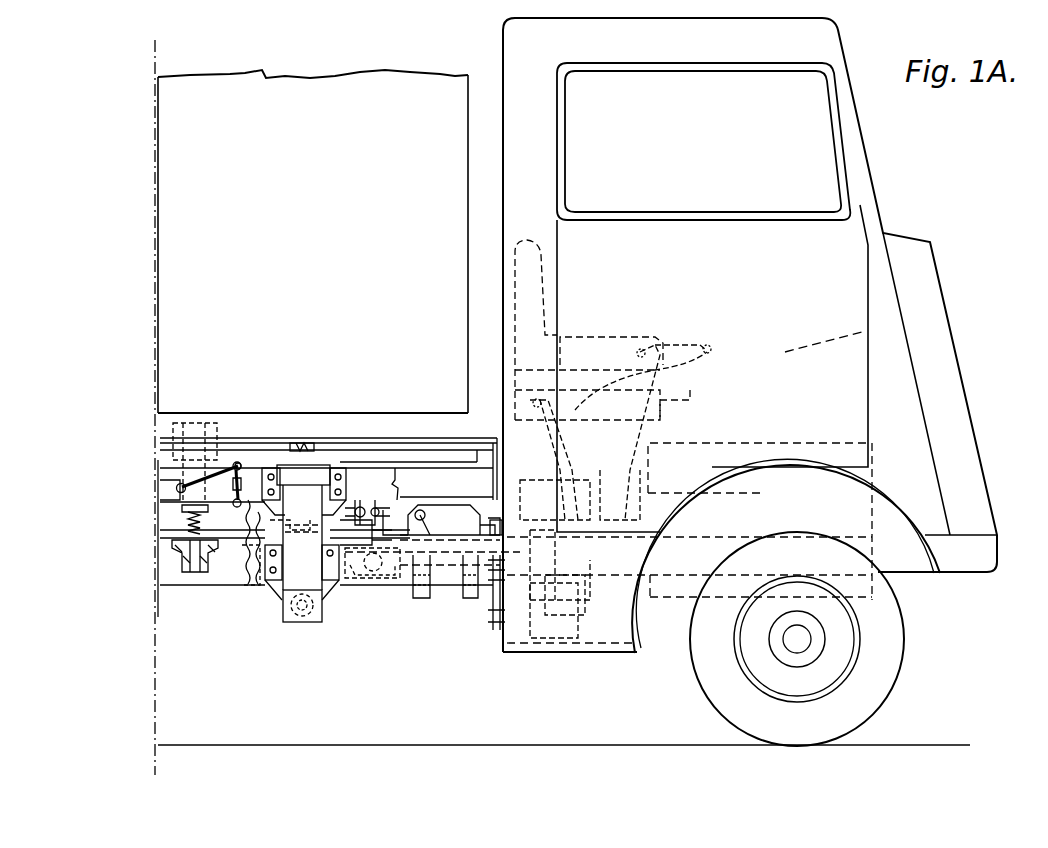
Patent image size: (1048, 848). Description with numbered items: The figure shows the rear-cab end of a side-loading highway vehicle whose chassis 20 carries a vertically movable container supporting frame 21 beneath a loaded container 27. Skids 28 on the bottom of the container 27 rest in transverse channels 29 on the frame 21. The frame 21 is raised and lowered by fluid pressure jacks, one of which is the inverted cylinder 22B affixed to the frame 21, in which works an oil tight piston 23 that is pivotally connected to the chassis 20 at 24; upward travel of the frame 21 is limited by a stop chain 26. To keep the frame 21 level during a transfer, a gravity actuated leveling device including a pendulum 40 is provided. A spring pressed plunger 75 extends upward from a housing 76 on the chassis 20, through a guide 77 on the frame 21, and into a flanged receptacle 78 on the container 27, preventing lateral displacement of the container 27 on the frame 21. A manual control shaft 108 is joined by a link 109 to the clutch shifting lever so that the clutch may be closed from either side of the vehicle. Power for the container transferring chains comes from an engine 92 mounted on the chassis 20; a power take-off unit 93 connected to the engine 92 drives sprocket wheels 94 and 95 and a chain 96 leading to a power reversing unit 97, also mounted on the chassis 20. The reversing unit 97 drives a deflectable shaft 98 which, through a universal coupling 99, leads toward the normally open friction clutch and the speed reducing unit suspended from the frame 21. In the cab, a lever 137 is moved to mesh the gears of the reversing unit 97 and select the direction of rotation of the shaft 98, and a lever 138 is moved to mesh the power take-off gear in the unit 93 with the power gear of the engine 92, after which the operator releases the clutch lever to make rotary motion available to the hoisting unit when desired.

The container 27 is at (282, 88).
The container supporting frame 21 is at (395, 470).
The chassis 20 is at (160, 585).
The flanged receptacle 78 is at (220, 440).
The guide 77 is at (236, 460).
The manual control shaft 108 is at (240, 462).
The link 109 is at (162, 480).
The spring pressed plunger 75 is at (185, 515).
The deflectable shaft 98 is at (165, 532).
The housing 76 is at (180, 562).
The stop chain 26 is at (265, 585).
The piston 23 is at (284, 592).
The skid 28 is at (305, 445).
The transverse channel 29 is at (340, 458).
The pivotal connection 24 is at (302, 622).
The inverted cylinder 22B is at (336, 584).
The pendulum 40 is at (380, 580).
The universal coupling 99 is at (395, 516).
The power reversing unit 97 is at (447, 523).
The sprocket wheel 95 is at (492, 520).
The chain 96 is at (495, 592).
The sprocket wheel 94 is at (497, 625).
The power take-off unit 93 is at (557, 643).
The engine 92 is at (820, 465).
The lever 137 is at (540, 420).
The lever 138 is at (670, 346).